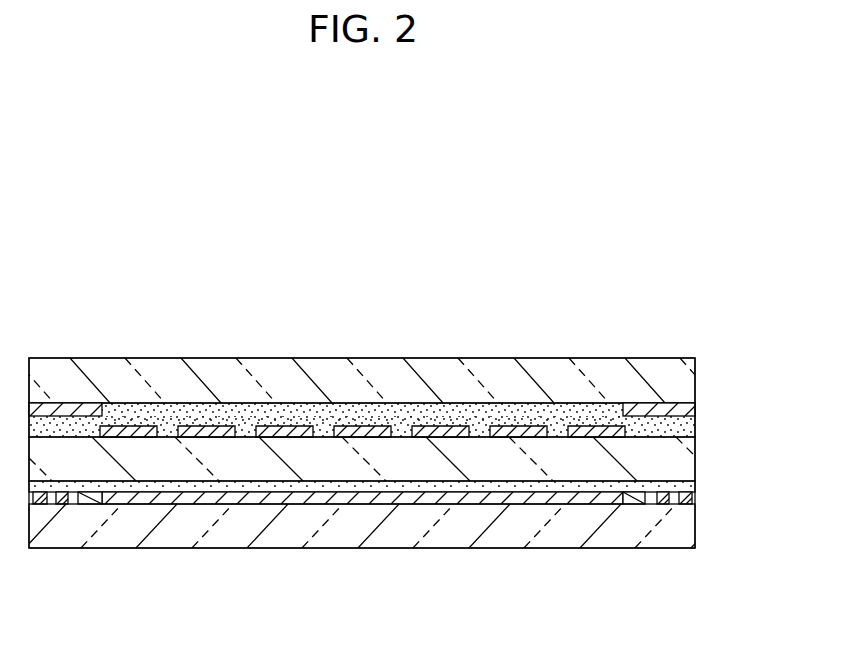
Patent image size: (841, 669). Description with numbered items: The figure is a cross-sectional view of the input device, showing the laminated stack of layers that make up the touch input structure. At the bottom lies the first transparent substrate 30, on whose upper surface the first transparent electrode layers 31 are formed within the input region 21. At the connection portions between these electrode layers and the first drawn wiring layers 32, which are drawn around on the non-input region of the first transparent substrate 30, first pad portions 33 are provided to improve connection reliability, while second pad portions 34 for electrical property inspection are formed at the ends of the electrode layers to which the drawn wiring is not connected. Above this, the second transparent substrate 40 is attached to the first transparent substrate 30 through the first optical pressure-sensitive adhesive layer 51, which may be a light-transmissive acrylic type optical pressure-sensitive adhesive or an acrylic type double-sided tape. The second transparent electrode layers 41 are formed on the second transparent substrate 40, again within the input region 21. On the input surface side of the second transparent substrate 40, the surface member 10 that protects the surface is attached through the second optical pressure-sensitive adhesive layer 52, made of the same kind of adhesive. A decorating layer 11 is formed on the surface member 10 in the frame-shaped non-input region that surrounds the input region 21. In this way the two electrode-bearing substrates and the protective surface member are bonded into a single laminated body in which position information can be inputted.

The surface member 10 is at (552, 378).
The decorating layer 11 is at (66, 408).
The input region 21 is at (263, 358).
The second transparent electrode layers 41 is at (438, 420).
The second optical pressure-sensitive adhesive layer 52 is at (172, 418).
The second transparent substrate 40 is at (667, 462).
The first optical pressure-sensitive adhesive layer 51 is at (215, 486).
The first transparent electrode layers 31 is at (552, 498).
The second pad portions 34 is at (89, 492).
The first pad portions 33 is at (638, 503).
The first drawn wiring layers 32 is at (683, 503).
The first transparent substrate 30 is at (405, 527).